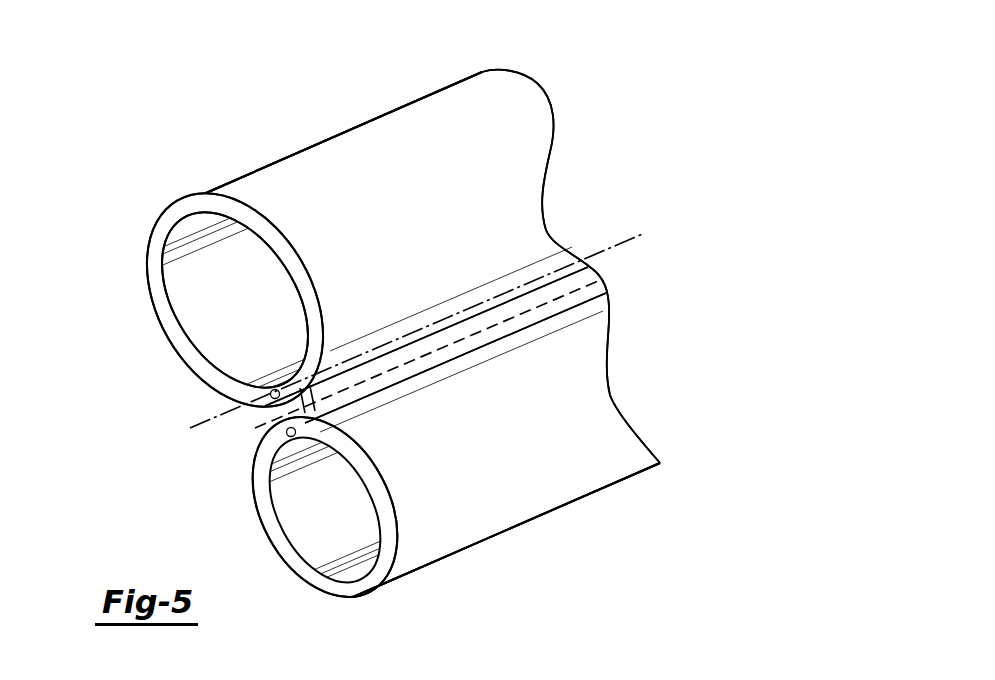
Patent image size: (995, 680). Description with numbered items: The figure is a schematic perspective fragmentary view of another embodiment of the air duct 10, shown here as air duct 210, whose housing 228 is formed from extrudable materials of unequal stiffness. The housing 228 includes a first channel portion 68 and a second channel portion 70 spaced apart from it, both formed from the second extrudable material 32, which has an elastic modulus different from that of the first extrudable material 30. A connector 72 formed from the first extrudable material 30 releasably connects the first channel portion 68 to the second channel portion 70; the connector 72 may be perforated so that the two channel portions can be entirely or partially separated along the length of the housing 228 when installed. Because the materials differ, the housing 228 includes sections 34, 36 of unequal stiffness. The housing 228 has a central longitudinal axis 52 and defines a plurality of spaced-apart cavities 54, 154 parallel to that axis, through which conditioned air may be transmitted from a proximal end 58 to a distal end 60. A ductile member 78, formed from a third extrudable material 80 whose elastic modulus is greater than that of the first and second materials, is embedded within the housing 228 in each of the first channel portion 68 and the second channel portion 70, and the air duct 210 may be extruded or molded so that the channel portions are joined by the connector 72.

The air duct 10 is at (363, 322).
The first extrudable material 30 is at (362, 390).
The second extrudable material 32 is at (294, 253).
The section 34 is at (345, 115).
The section 36 is at (603, 271).
The central longitudinal axis 52 is at (623, 241).
The cavity 54 is at (200, 292).
The proximal end 58 is at (168, 200).
The distal end 60 is at (509, 62).
The first channel portion 68 is at (433, 222).
The second channel portion 70 is at (495, 442).
The connector 72 is at (303, 405).
The ductile member 78 is at (273, 395).
The third extrudable material 80 is at (422, 330).
The cavity 154 is at (318, 542).
The air duct 210 is at (215, 92).
The housing 228 is at (418, 88).